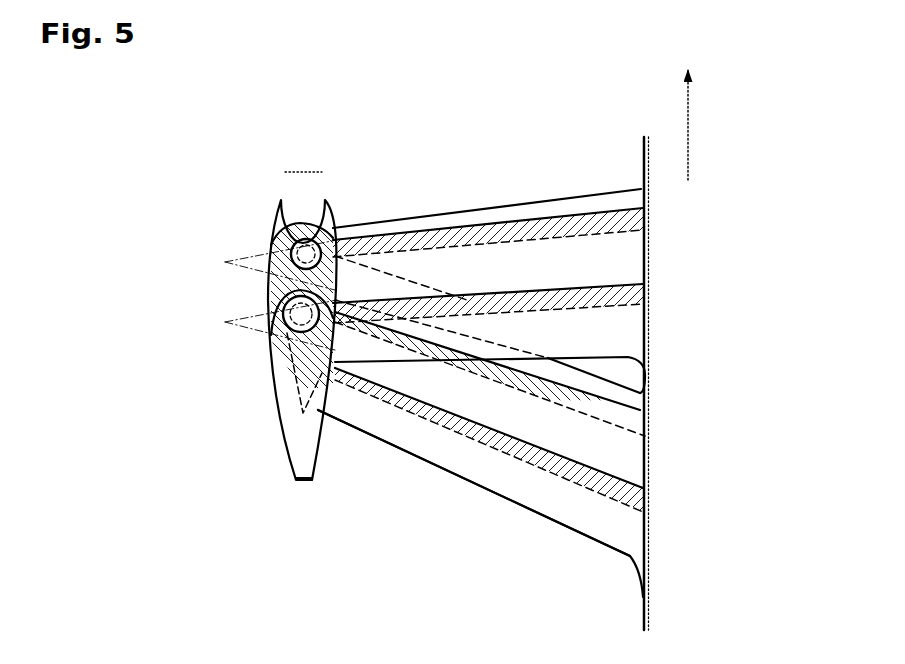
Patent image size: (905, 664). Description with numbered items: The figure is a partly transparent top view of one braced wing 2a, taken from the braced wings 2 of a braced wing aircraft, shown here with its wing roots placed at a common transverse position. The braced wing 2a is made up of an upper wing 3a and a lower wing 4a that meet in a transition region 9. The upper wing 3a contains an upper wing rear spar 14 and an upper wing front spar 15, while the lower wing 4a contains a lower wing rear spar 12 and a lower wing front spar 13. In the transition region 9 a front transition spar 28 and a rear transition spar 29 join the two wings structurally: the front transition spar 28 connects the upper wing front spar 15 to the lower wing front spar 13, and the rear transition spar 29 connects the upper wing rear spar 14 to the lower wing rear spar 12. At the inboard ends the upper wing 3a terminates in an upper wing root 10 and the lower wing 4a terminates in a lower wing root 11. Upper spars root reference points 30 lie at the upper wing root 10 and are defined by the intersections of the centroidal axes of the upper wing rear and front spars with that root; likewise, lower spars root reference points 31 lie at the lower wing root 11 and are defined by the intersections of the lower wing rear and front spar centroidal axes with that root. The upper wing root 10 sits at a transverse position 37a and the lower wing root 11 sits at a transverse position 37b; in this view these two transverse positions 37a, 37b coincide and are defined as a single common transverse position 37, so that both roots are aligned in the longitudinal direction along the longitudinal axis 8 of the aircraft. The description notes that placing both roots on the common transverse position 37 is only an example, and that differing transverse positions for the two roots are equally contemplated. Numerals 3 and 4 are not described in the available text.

The braced wings 2 is at (247, 177).
The braced wing 2a is at (358, 452).
The outer tube 3 is at (515, 192).
The upper wing 3a is at (594, 252).
The lower wall 4 is at (460, 478).
The lower wing 4a is at (438, 390).
The longitudinal axis 8 is at (690, 125).
The transition region 9 is at (265, 290).
The upper wing root 10 is at (655, 265).
The lower wing root 11 is at (655, 472).
The lower wing rear spar 12 is at (578, 492).
The lower wing front spar 13 is at (553, 400).
The upper wing rear spar 14 is at (565, 284).
The upper wing front spar 15 is at (441, 226).
The front transition spar 28 is at (275, 236).
The rear transition spar 29 is at (270, 310).
The upper spars root reference points 30 is at (655, 218).
The lower spars root reference points 31 is at (655, 430).
The common transverse position 37 is at (647, 137).
The transverse position 37a is at (655, 322).
The transverse position 37b is at (655, 547).